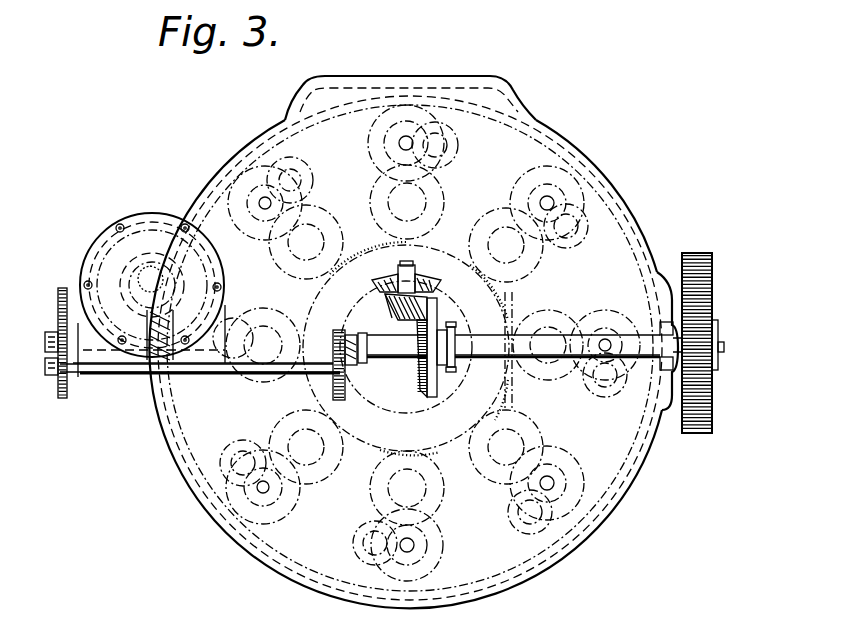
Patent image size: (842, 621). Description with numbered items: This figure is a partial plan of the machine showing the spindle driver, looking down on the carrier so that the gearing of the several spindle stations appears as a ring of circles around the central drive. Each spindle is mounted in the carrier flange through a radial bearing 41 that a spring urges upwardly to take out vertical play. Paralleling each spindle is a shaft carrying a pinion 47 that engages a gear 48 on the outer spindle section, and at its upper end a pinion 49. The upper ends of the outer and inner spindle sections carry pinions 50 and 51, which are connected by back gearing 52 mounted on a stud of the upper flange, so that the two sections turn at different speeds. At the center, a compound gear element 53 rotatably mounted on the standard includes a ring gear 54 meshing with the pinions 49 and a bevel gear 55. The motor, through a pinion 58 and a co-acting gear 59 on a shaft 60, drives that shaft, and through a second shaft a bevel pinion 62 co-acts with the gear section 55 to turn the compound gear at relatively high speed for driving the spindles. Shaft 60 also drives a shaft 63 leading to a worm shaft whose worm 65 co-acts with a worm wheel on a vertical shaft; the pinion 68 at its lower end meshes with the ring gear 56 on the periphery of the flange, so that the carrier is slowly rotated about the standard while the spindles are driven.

The radial bearing 41 is at (282, 352).
The pinion 47 is at (322, 240).
The gear 48 is at (287, 173).
The pinion 49 is at (390, 203).
The pinion 50 is at (400, 148).
The pinion 51 is at (393, 130).
The back gearing 52 is at (296, 158).
The compound gear element 53 is at (502, 387).
The ring gear 54 is at (313, 453).
The bevel gear 55 is at (446, 411).
The ring gear 56 is at (643, 460).
The pinion 58 is at (385, 306).
The gear 59 is at (420, 383).
The shaft 60 is at (558, 348).
The bevel pinion 62 is at (511, 293).
The shaft 63 is at (246, 370).
The worm 65 is at (140, 352).
The pinion 68 is at (138, 277).